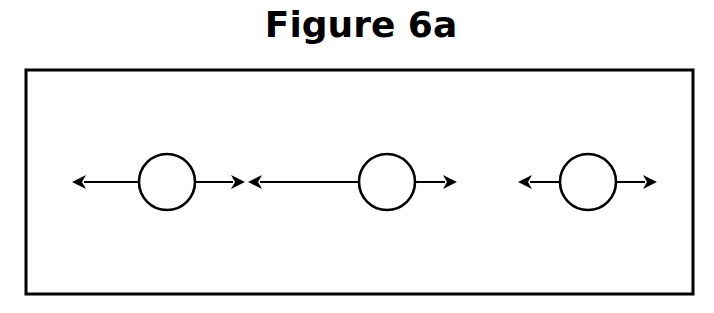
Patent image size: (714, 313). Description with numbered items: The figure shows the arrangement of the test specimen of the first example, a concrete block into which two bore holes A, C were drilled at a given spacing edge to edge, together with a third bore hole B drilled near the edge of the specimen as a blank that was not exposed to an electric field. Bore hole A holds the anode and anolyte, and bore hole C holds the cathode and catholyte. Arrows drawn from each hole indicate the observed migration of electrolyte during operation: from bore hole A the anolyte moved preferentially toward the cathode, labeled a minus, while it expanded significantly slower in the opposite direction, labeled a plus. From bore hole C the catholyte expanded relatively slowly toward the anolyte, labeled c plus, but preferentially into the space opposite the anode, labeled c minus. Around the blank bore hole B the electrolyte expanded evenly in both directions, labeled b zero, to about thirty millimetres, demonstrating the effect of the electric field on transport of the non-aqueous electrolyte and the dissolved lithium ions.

The bore hole A is at (357, 176).
The bore hole B is at (589, 169).
The bore hole C is at (158, 174).